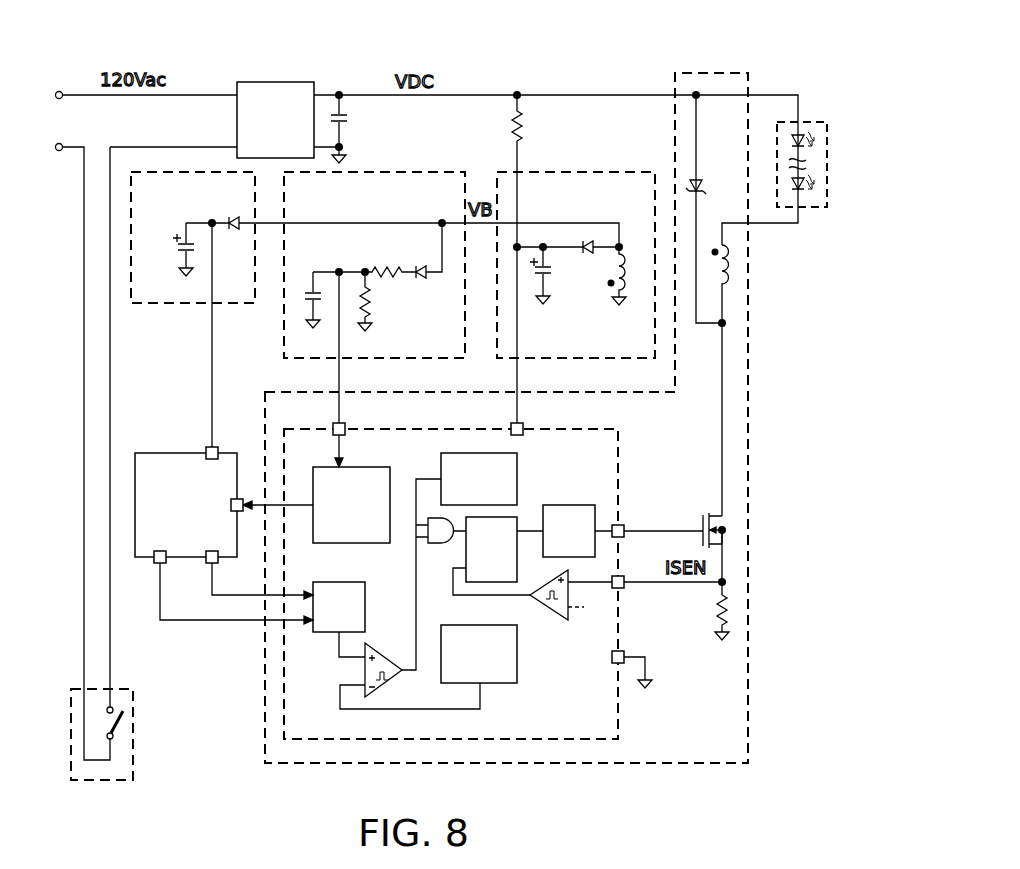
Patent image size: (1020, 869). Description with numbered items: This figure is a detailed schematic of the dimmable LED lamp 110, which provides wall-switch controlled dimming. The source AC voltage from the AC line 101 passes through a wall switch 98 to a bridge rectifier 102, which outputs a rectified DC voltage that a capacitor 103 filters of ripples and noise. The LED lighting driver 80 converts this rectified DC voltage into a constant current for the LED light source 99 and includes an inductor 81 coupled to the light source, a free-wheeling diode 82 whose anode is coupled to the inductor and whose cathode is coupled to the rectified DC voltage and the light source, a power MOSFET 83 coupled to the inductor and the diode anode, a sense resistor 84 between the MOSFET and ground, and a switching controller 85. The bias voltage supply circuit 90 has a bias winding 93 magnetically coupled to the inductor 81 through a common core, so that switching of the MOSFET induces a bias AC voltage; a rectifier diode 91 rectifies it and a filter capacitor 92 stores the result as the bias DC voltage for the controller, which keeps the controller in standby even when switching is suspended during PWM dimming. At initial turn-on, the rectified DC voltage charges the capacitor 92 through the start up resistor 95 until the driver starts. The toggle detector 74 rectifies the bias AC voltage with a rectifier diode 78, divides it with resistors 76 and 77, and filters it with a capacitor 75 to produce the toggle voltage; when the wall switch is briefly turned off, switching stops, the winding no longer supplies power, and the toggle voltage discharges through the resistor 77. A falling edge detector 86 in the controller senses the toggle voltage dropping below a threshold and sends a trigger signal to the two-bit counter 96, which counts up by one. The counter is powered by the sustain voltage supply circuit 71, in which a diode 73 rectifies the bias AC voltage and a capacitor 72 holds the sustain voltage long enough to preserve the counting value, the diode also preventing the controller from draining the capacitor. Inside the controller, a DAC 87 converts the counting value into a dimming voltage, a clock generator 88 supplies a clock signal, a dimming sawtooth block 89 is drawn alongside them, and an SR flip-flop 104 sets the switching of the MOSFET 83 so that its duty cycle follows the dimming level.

The LED lighting driver 80 is at (736, 740).
The AC line 101 is at (140, 426).
The wall switch 98 is at (136, 737).
The bridge rectifier 102 is at (258, 83).
The LED lamp 110 is at (550, 80).
The capacitor 103 is at (346, 118).
The start up resistor 95 is at (522, 132).
The sustain voltage supply circuit 71 is at (172, 201).
The capacitor 72 is at (181, 248).
The diode 73 is at (240, 221).
The toggle detector 74 is at (322, 201).
The filter capacitor 75 is at (306, 295).
The resistor 76 is at (380, 272).
The resistor 77 is at (372, 302).
The rectifier diode 78 is at (414, 285).
The bias voltage supply circuit 90 is at (633, 201).
The rectifier diode 91 is at (585, 240).
The filter capacitor 92 is at (550, 276).
The bias winding 93 is at (610, 285).
The free-wheeling diode 82 is at (705, 192).
The LED light source 99 is at (820, 118).
The inductor 81 is at (735, 272).
The power MOSFET 83 is at (716, 506).
The sense resistor 84 is at (712, 610).
The switching controller 85 is at (413, 570).
The falling edge detector 86 is at (364, 467).
The digital-to-analog converter (DAC) 87 is at (362, 582).
The SR flip-flop 104 is at (466, 552).
The clock generator 88 is at (519, 487).
The dimming sawtooth generator 89 is at (518, 640).
The counter 96 is at (189, 494).